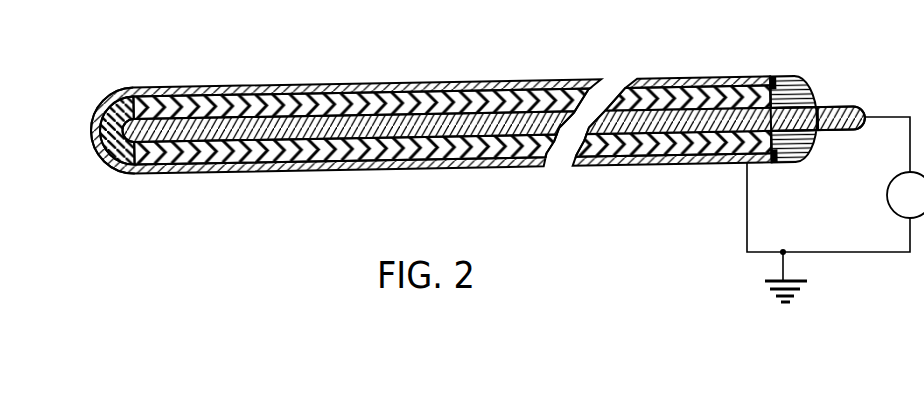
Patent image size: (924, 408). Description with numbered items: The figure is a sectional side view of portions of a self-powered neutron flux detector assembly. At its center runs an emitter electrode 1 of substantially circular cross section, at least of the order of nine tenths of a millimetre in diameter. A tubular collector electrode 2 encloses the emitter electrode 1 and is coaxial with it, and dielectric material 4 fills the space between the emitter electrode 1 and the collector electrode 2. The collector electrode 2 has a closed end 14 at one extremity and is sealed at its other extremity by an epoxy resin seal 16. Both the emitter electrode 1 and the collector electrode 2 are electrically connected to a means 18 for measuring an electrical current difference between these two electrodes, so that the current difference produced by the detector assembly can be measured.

The emitter electrode 1 is at (148, 152).
The tubular collector electrode 2 is at (172, 88).
The dielectric material 4 is at (368, 169).
The closed end 14 is at (93, 150).
The epoxy resin seal 16 is at (812, 96).
The means for measuring an electrical current difference 18 is at (921, 208).